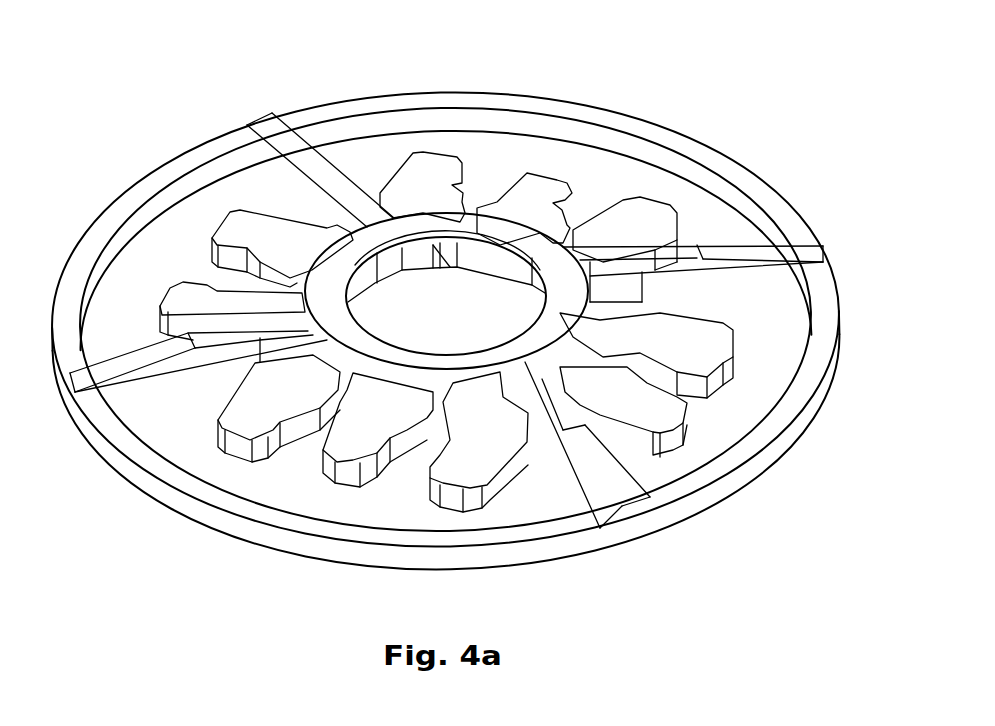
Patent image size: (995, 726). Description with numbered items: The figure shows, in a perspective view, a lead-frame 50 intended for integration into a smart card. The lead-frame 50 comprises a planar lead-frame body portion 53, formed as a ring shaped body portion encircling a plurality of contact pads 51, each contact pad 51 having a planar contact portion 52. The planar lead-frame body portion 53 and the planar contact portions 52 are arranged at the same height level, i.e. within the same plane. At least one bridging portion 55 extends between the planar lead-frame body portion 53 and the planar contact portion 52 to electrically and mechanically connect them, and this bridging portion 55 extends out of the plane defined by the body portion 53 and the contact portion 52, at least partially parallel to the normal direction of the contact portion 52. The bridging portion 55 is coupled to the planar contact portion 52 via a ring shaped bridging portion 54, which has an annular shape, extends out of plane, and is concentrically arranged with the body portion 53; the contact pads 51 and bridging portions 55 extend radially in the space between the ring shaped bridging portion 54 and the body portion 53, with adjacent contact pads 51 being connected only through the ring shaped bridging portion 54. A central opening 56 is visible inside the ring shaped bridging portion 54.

The lead-frame 50 is at (172, 78).
The contact pad 51 is at (546, 175).
The planar contact portion 52 is at (560, 205).
The planar lead-frame body portion 53 is at (165, 167).
The ring shaped bridging portion 54 is at (590, 300).
The bridging portion 55 is at (565, 465).
The central opening 56 is at (415, 270).